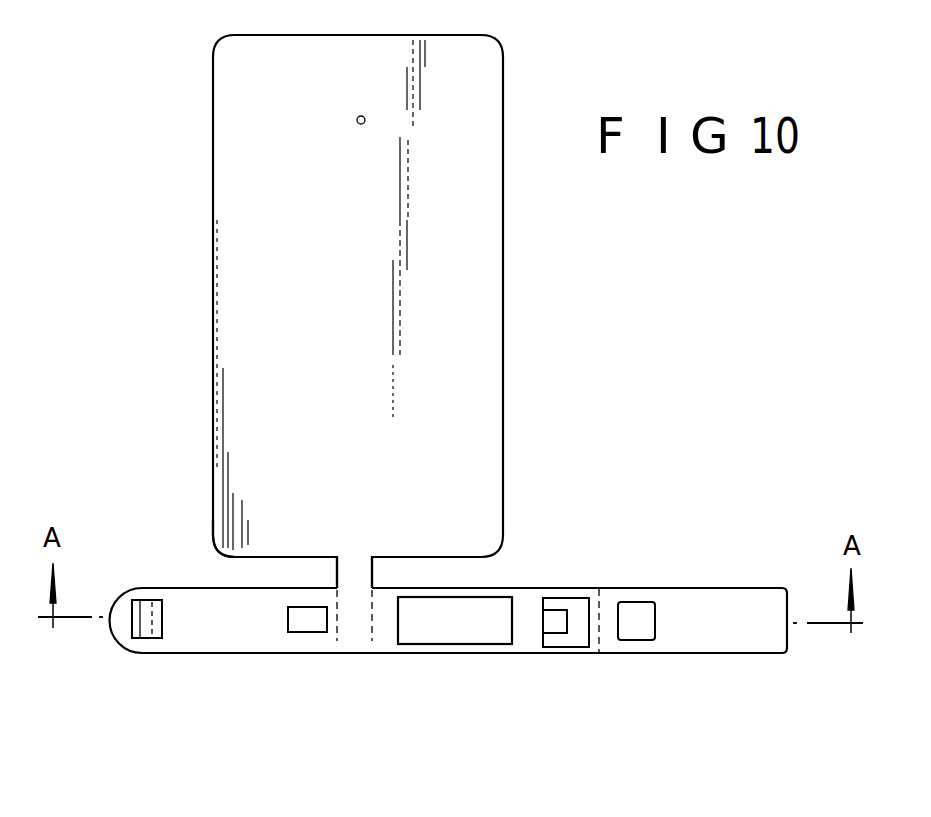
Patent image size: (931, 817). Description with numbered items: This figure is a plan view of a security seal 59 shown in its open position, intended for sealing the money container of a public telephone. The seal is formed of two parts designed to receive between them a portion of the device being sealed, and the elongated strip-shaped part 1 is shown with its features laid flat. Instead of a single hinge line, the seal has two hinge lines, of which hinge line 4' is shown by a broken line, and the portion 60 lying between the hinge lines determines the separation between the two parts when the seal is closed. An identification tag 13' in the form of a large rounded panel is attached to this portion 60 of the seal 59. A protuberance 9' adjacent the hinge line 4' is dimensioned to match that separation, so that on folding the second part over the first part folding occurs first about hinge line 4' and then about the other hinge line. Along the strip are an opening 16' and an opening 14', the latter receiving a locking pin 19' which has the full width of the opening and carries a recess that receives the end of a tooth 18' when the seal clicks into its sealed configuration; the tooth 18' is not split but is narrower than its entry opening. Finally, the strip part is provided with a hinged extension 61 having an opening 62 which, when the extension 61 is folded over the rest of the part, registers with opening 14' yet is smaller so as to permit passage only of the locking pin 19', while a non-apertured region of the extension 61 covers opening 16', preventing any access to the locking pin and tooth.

The first part of the seal 1 is at (503, 655).
The hinge line 4' is at (400, 648).
The protuberance 9' is at (288, 660).
The identification tag 13' is at (323, 311).
The opening 14' is at (584, 579).
The opening 16' is at (487, 578).
The tooth 18' is at (586, 668).
The locking pin 19' is at (136, 655).
The security seal 59 is at (200, 543).
The portion between hinge lines 60 is at (355, 628).
The hinged extension 61 is at (743, 602).
The opening 62 is at (635, 608).